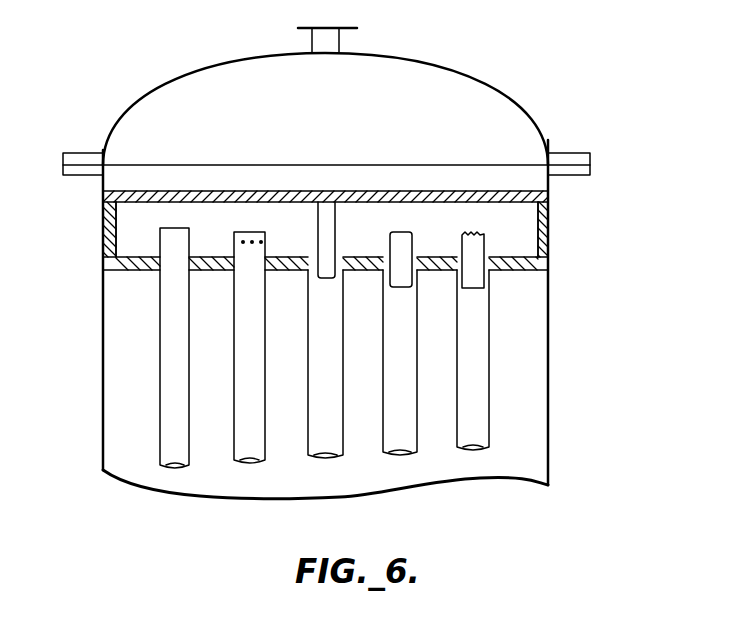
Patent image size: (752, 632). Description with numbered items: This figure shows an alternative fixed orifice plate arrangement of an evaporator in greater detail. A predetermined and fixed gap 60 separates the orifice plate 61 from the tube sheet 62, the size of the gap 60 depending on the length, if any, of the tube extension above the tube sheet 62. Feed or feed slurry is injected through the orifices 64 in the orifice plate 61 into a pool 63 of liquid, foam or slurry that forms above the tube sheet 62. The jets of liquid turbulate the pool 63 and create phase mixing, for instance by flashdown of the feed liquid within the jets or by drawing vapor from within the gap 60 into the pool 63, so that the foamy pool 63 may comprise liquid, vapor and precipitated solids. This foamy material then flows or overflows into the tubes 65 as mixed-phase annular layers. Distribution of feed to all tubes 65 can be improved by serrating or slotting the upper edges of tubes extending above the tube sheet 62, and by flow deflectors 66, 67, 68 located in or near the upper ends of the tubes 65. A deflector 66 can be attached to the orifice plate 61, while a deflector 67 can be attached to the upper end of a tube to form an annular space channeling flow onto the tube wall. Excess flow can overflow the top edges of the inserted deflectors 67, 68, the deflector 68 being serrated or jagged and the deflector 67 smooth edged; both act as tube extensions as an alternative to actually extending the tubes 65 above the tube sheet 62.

The gap 60 is at (220, 231).
The orifice plate 61 is at (487, 192).
The tube sheet 62 is at (517, 270).
The pool of liquid or foam or slurry 63 is at (373, 251).
The orifices 64 is at (437, 192).
The tubes 65 is at (233, 230).
The flow deflector 66 is at (325, 233).
The smooth-edged deflector 67 is at (398, 232).
The serrated deflector 68 is at (478, 233).